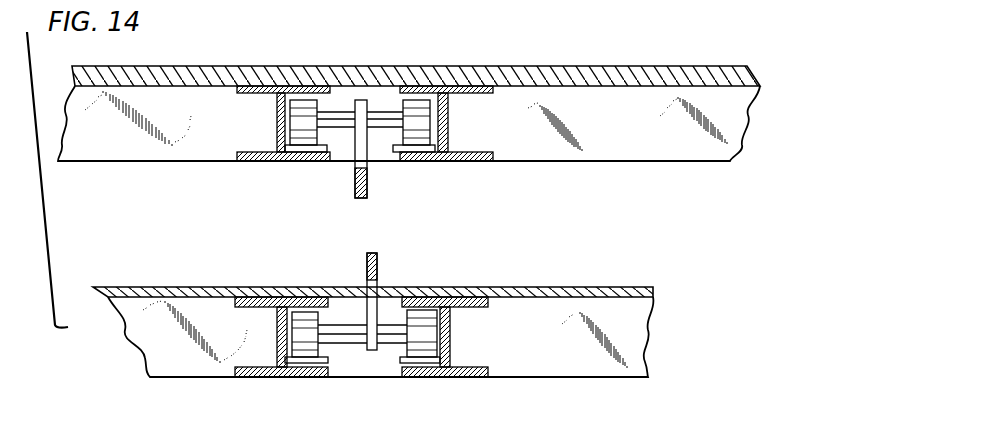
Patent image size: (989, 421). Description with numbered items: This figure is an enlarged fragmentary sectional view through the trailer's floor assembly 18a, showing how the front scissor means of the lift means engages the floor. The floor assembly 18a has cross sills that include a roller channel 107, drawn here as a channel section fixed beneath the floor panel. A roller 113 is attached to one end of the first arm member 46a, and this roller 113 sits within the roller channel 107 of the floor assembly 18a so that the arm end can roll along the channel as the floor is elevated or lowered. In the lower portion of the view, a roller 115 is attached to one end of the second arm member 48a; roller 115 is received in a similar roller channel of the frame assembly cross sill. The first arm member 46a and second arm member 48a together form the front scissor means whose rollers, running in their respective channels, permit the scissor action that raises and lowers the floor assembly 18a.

The floor assembly 18a is at (613, 67).
The roller channel 107 is at (432, 162).
The roller 113 is at (430, 120).
The first arm member 46a is at (358, 132).
The second arm member 48a is at (377, 258).
The roller 115 is at (425, 335).